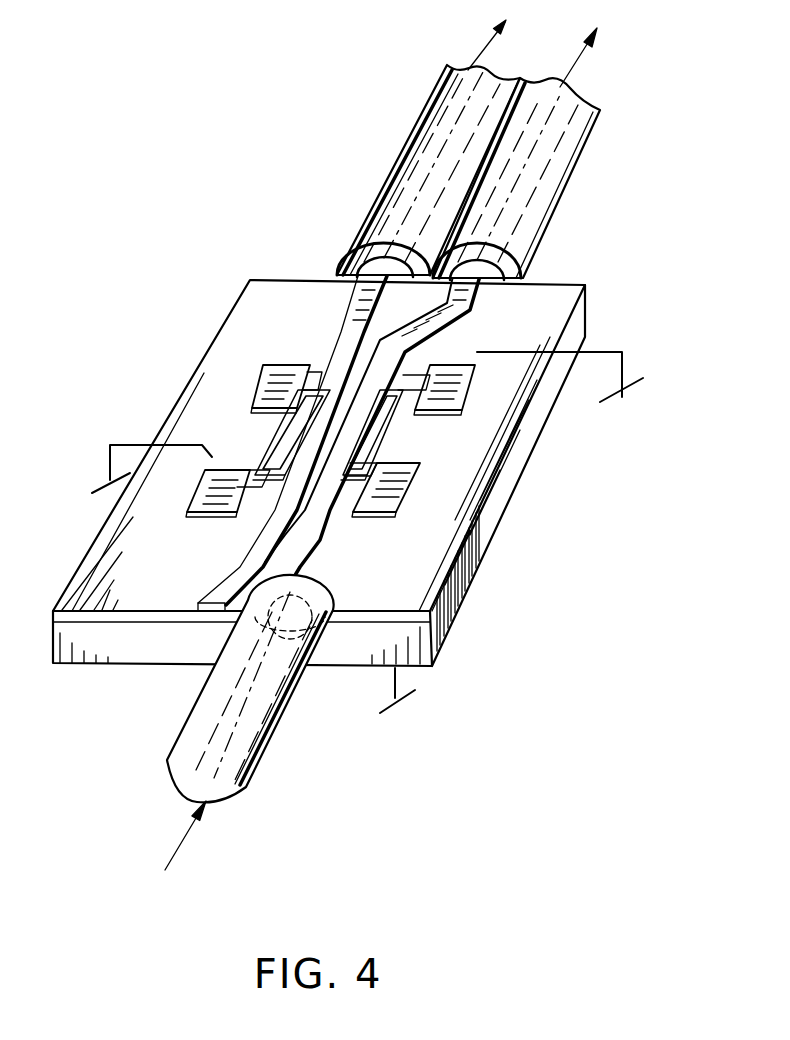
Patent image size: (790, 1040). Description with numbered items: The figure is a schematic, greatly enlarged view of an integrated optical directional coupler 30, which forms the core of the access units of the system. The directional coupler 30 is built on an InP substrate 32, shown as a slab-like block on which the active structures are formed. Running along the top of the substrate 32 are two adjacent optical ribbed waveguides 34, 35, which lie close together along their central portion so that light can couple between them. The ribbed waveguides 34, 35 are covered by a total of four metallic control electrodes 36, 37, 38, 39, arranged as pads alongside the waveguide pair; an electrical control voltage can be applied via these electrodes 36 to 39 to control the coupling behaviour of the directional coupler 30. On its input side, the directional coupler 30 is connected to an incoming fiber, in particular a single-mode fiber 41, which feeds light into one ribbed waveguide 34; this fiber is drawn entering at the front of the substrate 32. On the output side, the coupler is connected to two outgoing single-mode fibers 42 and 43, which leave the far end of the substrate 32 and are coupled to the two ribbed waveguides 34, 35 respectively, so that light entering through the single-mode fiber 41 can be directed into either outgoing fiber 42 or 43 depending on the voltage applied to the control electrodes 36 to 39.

The integrated optical directional coupler 30 is at (170, 652).
The InP substrate 32 is at (452, 605).
The ribbed waveguide 34 is at (475, 289).
The ribbed waveguide 35 is at (353, 318).
The metallic control electrode 36 is at (452, 381).
The metallic control electrode 37 is at (400, 487).
The metallic control electrode 38 is at (203, 517).
The metallic control electrode 39 is at (263, 390).
The single-mode fiber 41 is at (230, 751).
The outgoing single-mode fiber 42 is at (550, 210).
The outgoing single-mode fiber 43 is at (376, 200).